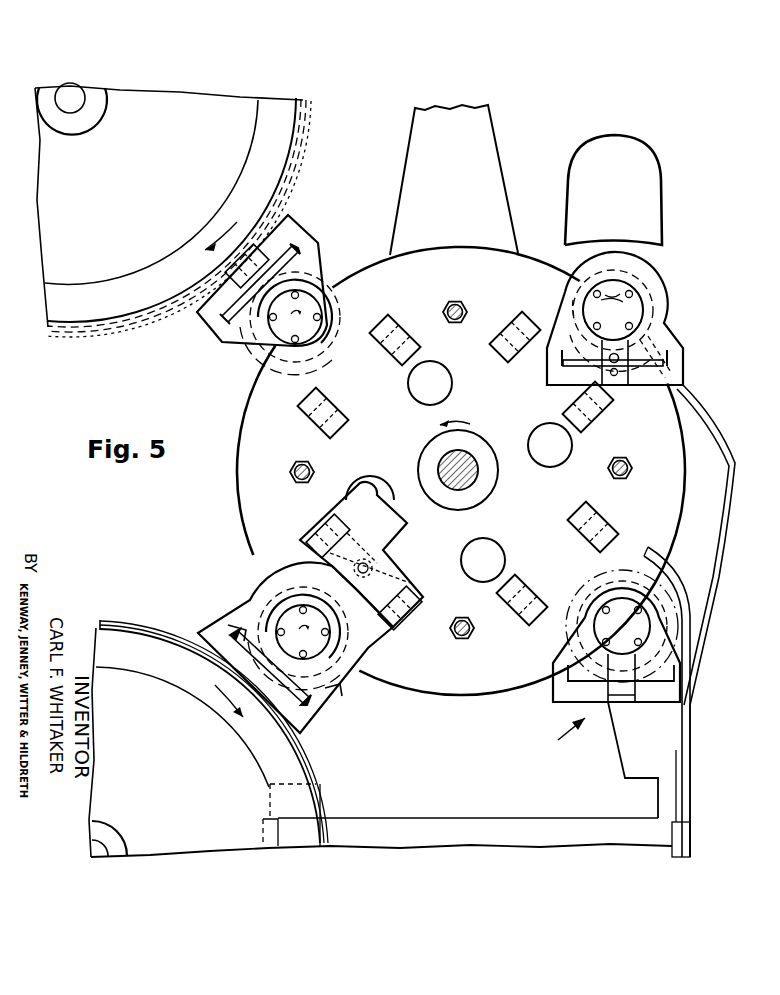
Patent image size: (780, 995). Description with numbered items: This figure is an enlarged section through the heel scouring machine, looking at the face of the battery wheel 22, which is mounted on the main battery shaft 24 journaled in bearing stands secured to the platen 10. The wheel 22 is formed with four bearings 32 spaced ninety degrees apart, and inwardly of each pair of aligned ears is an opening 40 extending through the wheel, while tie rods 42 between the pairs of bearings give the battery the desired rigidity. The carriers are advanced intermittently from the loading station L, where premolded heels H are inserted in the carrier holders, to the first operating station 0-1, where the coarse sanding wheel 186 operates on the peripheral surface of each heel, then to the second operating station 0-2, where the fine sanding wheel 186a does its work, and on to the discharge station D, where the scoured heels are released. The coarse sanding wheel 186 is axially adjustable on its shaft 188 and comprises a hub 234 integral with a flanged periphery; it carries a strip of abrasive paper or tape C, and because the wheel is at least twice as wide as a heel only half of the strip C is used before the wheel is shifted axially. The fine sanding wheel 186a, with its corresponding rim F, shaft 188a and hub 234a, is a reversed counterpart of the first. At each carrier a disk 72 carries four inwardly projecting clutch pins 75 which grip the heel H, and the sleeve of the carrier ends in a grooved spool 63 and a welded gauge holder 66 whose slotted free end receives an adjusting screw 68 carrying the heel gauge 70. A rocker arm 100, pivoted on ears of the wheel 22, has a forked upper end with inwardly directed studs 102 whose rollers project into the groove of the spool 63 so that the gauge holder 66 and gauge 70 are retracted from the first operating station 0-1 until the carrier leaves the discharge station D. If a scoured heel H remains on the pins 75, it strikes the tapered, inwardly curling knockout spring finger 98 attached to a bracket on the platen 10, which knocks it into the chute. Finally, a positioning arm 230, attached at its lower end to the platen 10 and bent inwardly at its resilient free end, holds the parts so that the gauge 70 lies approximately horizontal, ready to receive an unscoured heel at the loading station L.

The wheel 22 is at (474, 676).
The main battery shaft 24 is at (476, 484).
The opening 40 is at (452, 383).
The tie rods 42 is at (467, 310).
The bearings 32 is at (375, 375).
The sanding wheel 186 is at (122, 216).
The strip of abrasive paper or tape C is at (310, 150).
The shaft 188 is at (72, 104).
The hub 234 is at (97, 118).
The sanding wheel 186a is at (162, 756).
The rim of second sector F is at (128, 622).
The second pivot pin 188a is at (110, 850).
The second pivot boss 234a is at (103, 829).
The platen 10 is at (430, 820).
The positioning arm 230 is at (706, 426).
The knockout spring finger 98 is at (668, 580).
The heel H is at (655, 172).
The first operating station 0-1 is at (331, 256).
The second operating station 0-2 is at (225, 598).
The studs 102 is at (240, 626).
The rocker arm 100 is at (367, 640).
The loading station L is at (656, 256).
The gauge holder 66 is at (548, 385).
The adjusting screw 68 is at (614, 380).
The heel gauge 70 is at (645, 388).
The clutch pins 75 is at (613, 310).
The spool 63 is at (575, 298).
The disk 72 is at (622, 292).
The unloading or discharge station D is at (561, 737).